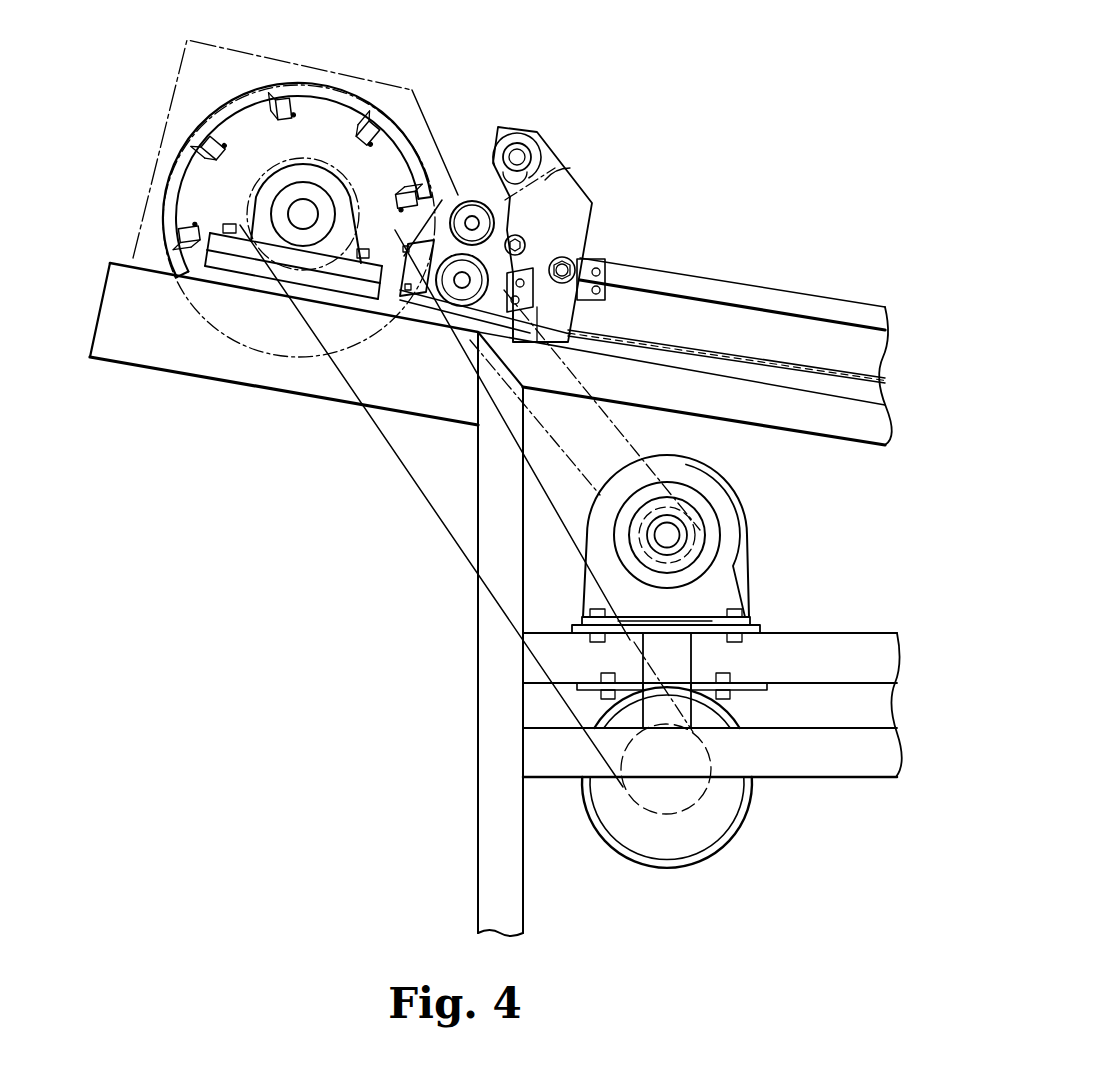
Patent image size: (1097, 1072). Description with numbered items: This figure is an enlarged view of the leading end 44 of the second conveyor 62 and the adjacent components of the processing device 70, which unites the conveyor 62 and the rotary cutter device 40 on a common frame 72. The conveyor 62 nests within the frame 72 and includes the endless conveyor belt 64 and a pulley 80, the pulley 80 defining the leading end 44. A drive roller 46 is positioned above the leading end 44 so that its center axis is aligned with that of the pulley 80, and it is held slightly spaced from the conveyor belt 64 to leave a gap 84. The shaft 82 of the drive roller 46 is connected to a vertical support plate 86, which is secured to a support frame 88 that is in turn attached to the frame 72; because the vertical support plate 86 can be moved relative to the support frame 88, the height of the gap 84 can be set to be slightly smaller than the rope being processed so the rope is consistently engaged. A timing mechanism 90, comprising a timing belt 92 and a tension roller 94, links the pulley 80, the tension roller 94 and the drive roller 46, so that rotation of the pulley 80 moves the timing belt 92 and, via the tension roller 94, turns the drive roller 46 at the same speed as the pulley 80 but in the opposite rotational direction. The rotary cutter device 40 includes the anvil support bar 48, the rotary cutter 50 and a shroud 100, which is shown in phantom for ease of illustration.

The rotary cutter device 40 is at (429, 116).
The leading end 44 is at (570, 262).
The drive roller 46 is at (471, 196).
The anvil support bar 48 is at (404, 256).
The rotary cutter 50 is at (173, 188).
The second conveyor 62 is at (644, 265).
The conveyor belt 64 is at (724, 300).
The processing device 70 is at (742, 199).
The frame 72 is at (470, 702).
The pulley 80 is at (461, 298).
The shaft 82 is at (438, 194).
The gap 84 is at (438, 243).
The vertical support plate 86 is at (510, 217).
The support frame 88 is at (580, 200).
The timing mechanism 90 is at (488, 140).
The timing belt 92 is at (548, 178).
The tension roller 94 is at (526, 146).
The shroud 100 is at (130, 233).